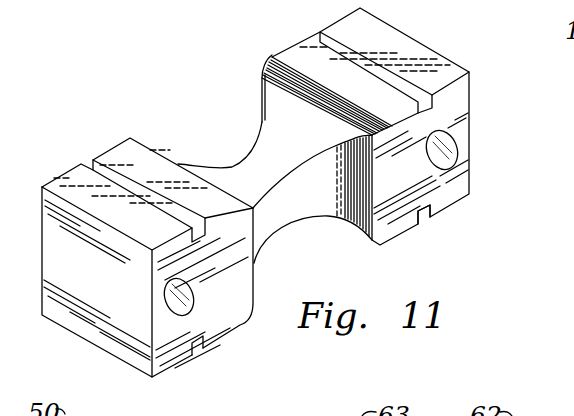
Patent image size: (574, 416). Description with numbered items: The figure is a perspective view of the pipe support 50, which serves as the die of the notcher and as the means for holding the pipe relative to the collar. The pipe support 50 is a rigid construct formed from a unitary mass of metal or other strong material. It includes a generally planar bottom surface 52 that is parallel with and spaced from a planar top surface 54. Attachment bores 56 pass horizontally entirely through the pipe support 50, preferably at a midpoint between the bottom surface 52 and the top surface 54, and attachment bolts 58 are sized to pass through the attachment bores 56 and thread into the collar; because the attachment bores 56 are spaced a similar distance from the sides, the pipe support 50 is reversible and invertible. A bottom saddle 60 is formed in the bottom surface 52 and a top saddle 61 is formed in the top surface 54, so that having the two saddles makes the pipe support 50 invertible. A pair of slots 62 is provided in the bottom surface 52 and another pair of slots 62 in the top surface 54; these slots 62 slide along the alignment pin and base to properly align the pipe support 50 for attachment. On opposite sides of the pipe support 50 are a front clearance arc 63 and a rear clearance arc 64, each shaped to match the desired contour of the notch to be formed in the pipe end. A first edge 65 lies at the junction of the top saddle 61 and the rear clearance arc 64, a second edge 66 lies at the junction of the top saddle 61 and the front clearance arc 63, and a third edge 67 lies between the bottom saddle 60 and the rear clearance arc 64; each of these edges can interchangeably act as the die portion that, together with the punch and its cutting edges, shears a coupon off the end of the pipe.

The pipe support 50 is at (104, 62).
The bottom surface 52 is at (222, 338).
The top surface 54 is at (68, 182).
The attachment bores 56 is at (194, 285).
The attachment bolts 58 is at (365, 126).
The bottom saddle 60 is at (325, 217).
The top saddle 61 is at (270, 56).
The slots 62 is at (93, 158).
The front clearance arc 63 is at (259, 108).
The rear clearance arc 64 is at (321, 197).
The first edge 65 is at (303, 168).
The second edge 66 is at (224, 166).
The third edge 67 is at (307, 216).